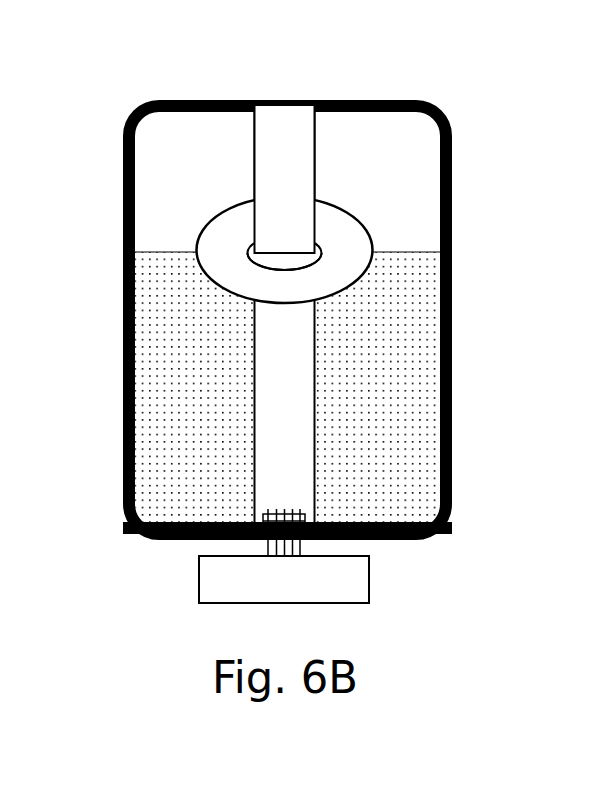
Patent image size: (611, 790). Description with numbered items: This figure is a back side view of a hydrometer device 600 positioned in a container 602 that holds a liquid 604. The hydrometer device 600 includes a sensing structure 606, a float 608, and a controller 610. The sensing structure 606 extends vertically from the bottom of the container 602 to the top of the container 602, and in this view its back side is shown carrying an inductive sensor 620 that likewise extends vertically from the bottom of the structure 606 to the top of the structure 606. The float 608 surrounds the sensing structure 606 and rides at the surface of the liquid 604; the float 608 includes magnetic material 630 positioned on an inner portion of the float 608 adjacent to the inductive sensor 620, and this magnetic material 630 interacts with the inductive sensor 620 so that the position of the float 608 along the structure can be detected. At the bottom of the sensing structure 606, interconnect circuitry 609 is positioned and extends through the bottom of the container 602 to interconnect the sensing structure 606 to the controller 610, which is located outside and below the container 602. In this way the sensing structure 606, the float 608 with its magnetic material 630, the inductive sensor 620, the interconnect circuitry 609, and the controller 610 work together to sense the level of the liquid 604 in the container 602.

The hydrometer device 600 is at (292, 319).
The container 602 is at (388, 57).
The liquid 604 is at (402, 252).
The sensing structure 606 is at (250, 367).
The float 608 is at (357, 209).
The magnetic material 630 is at (289, 258).
The inductive sensor 620 is at (283, 318).
The interconnect circuitry 609 is at (299, 505).
The controller 610 is at (369, 582).